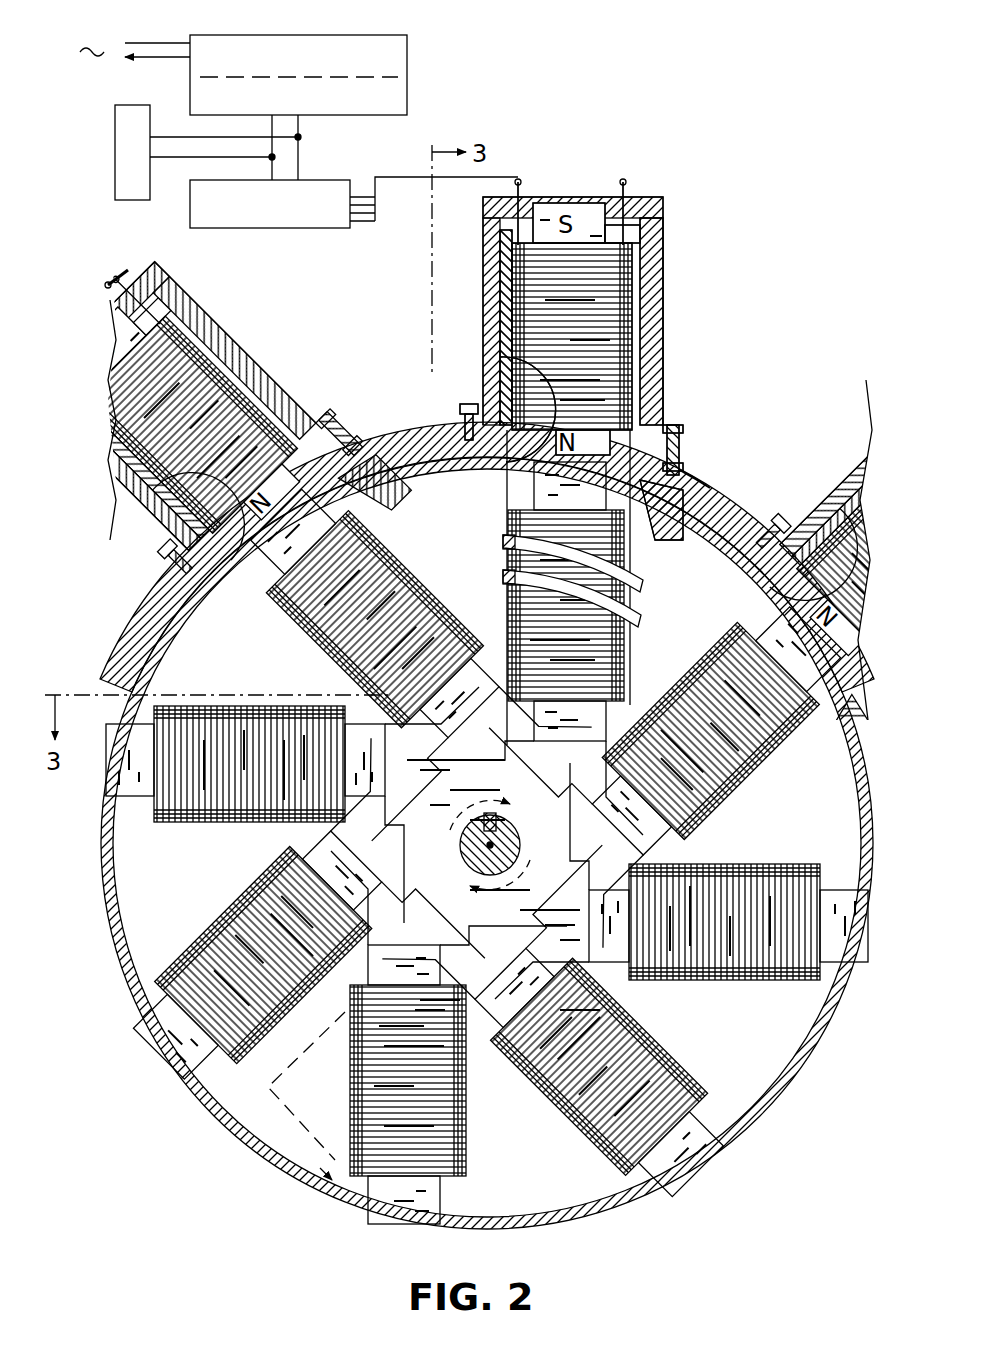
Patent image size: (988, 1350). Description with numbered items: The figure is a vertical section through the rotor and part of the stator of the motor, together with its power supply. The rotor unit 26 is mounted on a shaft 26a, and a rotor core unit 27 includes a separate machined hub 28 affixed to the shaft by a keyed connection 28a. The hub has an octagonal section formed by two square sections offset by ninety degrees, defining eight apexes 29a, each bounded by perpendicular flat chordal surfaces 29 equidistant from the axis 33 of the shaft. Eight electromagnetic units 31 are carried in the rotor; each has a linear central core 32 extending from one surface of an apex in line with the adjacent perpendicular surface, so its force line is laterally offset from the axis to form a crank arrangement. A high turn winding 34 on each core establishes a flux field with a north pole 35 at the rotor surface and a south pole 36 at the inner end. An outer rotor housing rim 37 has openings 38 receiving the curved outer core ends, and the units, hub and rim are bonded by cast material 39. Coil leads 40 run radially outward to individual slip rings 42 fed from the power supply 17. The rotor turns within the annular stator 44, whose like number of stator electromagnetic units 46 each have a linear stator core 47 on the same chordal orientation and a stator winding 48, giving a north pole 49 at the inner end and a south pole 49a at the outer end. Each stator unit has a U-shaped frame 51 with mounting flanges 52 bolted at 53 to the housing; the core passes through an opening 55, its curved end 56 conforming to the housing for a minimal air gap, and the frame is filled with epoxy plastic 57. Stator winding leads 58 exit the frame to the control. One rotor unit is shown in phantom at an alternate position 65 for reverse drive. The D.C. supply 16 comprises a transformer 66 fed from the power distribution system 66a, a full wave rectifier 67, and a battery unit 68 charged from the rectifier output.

The D.C. supply 16 is at (328, 58).
The alternating current transformer 66 is at (376, 34).
The full wave rectifier 67 is at (407, 101).
The power distribution system 66a is at (80, 88).
The battery unit 68 is at (125, 200).
The power supply 17 is at (354, 171).
The rotor unit 26 is at (225, 1118).
The shaft 26a is at (522, 845).
The rotor core unit 27 is at (350, 830).
The hub 28 is at (503, 885).
The keyed connection 28a is at (482, 812).
The chordal surfaces 29 is at (338, 884).
The apexes 29a is at (585, 941).
The electromagnetic units 31 is at (490, 827).
The central core 32 is at (520, 520).
The axis 33 is at (488, 850).
The winding 34 is at (487, 842).
The north pole 35 is at (687, 482).
The south pole 36 is at (530, 715).
The rotor housing rim 37 is at (730, 523).
The openings 38 is at (532, 488).
The cast material 39 is at (682, 540).
The electrical leads 40 is at (502, 548).
The slip rings 42 is at (506, 578).
The stator 44 is at (380, 423).
The stator electromagnetic unit 46 is at (584, 360).
The stator core 47 is at (608, 230).
The stator winding 48 is at (621, 348).
The north pole 49 is at (582, 443).
The south pole 49a is at (574, 202).
The U-shaped frame 51 is at (657, 246).
The mounting flanges 52 is at (682, 442).
The bolts 53 is at (674, 425).
The opening 55 is at (506, 372).
The curved core end 56 is at (458, 414).
The epoxy plastic 57 is at (496, 242).
The stator winding leads 58 is at (520, 182).
The alternate position 65 is at (333, 1180).